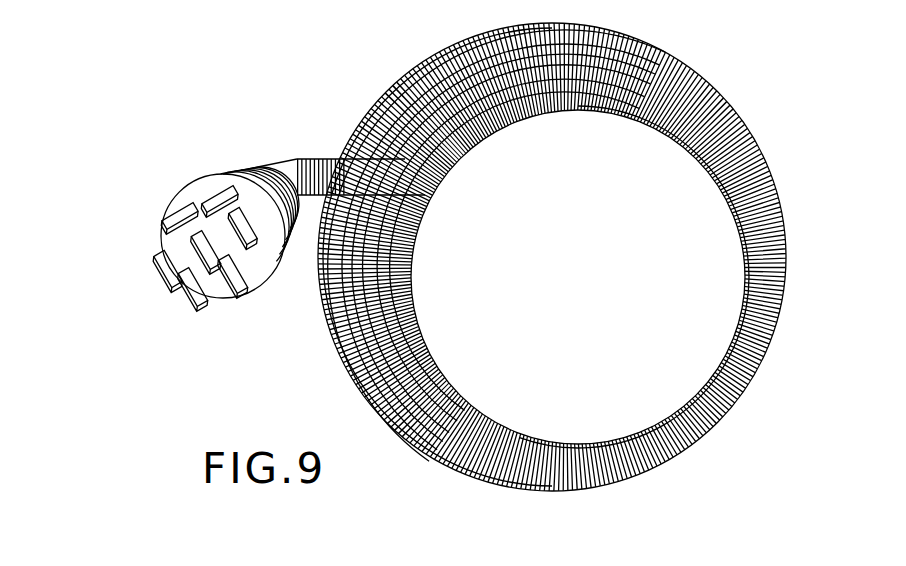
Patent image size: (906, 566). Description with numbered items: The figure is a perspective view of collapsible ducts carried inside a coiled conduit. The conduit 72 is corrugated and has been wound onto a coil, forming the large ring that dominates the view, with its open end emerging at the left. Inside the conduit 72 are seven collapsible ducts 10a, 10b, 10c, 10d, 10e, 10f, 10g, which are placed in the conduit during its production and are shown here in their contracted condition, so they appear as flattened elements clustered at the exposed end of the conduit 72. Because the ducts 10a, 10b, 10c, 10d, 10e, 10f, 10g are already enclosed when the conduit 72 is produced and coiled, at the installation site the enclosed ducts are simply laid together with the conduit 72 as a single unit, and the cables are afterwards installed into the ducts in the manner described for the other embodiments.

The conduit 72 is at (197, 182).
The collapsible duct 10a is at (163, 272).
The collapsible duct 10b is at (172, 237).
The collapsible duct 10c is at (190, 300).
The collapsible duct 10d is at (217, 288).
The collapsible duct 10e is at (243, 275).
The collapsible duct 10f is at (257, 240).
The collapsible duct 10g is at (217, 202).